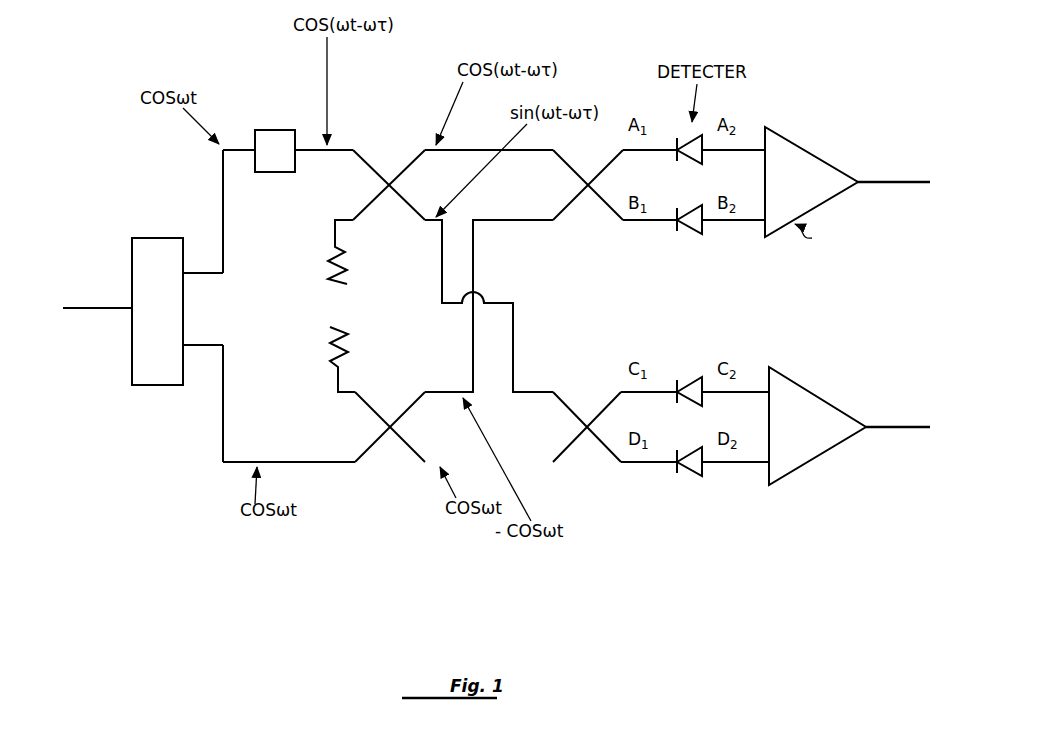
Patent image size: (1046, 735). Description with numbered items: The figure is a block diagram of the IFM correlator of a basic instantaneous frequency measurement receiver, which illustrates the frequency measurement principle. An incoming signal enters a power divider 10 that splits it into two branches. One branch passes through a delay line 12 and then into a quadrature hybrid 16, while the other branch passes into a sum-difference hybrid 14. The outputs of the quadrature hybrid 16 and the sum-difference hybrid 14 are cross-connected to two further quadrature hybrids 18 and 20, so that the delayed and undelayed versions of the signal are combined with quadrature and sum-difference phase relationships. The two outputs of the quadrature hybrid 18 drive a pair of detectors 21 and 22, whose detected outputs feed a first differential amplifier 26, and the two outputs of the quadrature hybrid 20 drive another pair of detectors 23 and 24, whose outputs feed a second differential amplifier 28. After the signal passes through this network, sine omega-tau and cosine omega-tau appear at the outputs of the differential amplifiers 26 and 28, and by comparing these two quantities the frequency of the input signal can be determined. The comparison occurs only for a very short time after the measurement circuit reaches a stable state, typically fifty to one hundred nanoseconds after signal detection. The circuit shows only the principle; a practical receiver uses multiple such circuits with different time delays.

The power divider 10 is at (132, 272).
The delay line 12 is at (270, 172).
The sum-difference hybrid 14 is at (390, 420).
The quadrature hybrid 16 is at (388, 195).
The quadrature hybrid 18 is at (587, 195).
The quadrature hybrid 20 is at (588, 420).
The detector 21 is at (702, 160).
The detector 22 is at (702, 230).
The detector 23 is at (688, 380).
The detector 24 is at (691, 473).
The differential amplifier 26 is at (803, 145).
The differential amplifier 28 is at (810, 462).